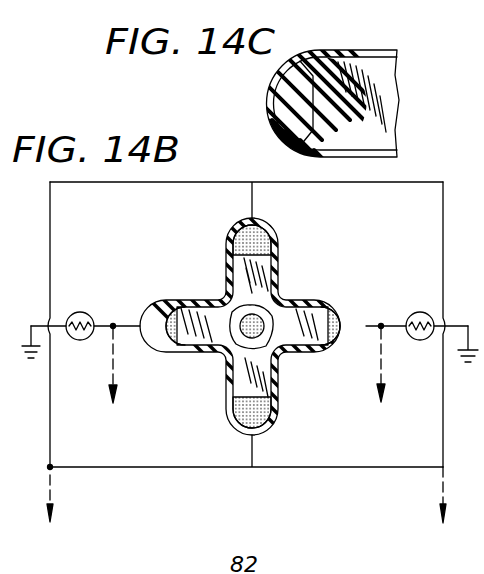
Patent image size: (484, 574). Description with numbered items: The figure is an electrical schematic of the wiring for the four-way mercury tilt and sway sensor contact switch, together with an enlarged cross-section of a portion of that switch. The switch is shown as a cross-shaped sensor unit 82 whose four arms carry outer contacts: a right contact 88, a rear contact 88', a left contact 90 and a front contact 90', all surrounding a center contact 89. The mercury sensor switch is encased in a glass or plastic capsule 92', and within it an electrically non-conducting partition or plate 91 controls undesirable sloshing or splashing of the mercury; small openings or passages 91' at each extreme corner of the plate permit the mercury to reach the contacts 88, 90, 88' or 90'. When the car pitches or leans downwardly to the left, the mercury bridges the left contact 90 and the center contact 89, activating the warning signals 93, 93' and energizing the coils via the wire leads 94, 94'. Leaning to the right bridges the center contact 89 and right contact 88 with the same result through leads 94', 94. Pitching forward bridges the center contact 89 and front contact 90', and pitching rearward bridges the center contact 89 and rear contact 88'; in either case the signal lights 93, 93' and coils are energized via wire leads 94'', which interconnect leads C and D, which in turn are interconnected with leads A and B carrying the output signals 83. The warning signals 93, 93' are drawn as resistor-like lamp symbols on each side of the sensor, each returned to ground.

In FIG. 14B, the sensor circuit assembly 82 is at (230, 358).
In FIG. 14B, the output signal 83 is at (114, 378).
In FIG. 14B, the right contact 88 is at (156, 312).
In FIG. 14B, the rear contact 88' is at (266, 225).
In FIG. 14B, the center contact 89 is at (242, 324).
In FIG. 14B, the left contact 90 is at (341, 312).
In FIG. 14B, the front contact 90' is at (232, 413).
In FIG. 14C, the partition or plate 91 is at (386, 97).
In FIG. 14B, the partition or plate 91 is at (250, 319).
In FIG. 14C, the openings or passages 91' is at (272, 103).
In FIG. 14C, the capsule 92' is at (324, 134).
In FIG. 14B, the capsule 92' is at (307, 349).
In FIG. 14B, the warning signal 93 is at (81, 318).
In FIG. 14B, the warning signal 93' is at (422, 322).
In FIG. 14B, the wire lead 94 is at (118, 293).
In FIG. 14B, the wire lead 94' is at (390, 298).
In FIG. 14B, the wire leads 94'' is at (246, 324).